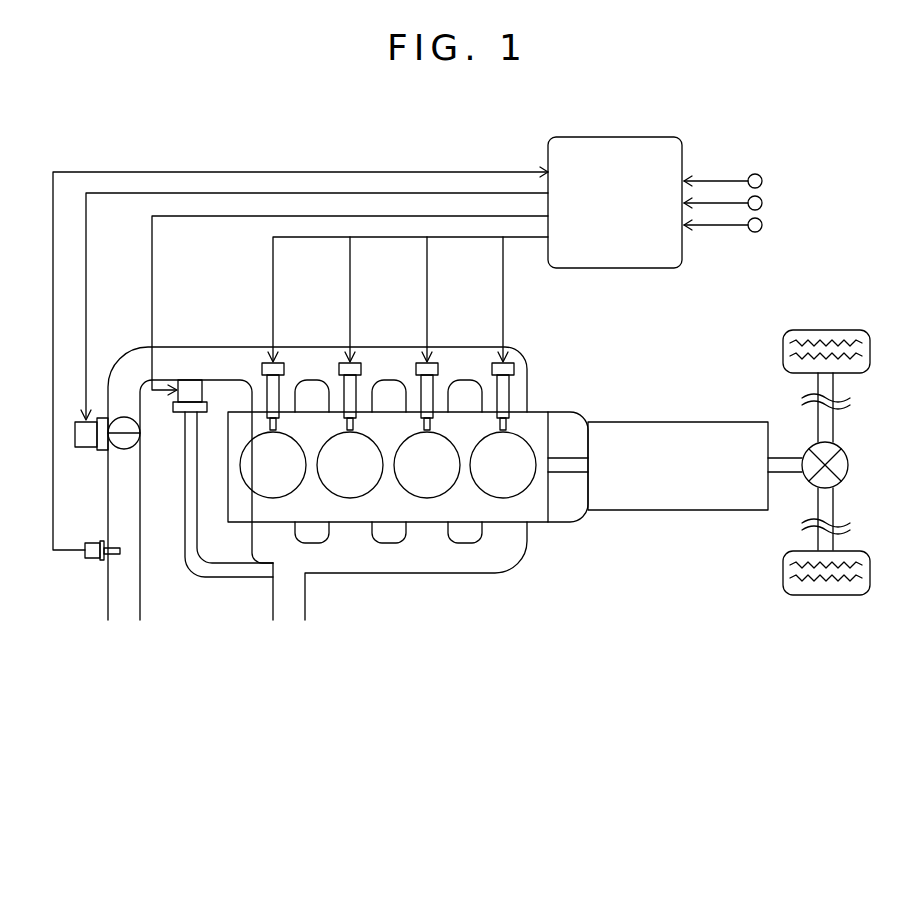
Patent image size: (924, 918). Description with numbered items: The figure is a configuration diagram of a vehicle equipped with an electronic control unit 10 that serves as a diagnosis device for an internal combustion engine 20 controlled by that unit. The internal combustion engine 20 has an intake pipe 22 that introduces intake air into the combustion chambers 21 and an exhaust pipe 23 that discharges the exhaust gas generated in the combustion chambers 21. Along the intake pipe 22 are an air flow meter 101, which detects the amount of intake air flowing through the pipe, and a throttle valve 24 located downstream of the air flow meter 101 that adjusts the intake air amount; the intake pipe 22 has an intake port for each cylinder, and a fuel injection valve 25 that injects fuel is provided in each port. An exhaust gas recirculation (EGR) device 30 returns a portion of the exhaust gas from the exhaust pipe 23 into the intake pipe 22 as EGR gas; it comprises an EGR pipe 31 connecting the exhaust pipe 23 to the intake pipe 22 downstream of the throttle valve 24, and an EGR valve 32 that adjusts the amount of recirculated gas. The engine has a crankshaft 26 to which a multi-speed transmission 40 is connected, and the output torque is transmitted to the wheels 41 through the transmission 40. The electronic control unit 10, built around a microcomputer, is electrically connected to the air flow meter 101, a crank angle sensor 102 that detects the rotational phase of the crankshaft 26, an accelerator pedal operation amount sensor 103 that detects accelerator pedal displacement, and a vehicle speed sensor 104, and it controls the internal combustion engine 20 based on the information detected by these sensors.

The electronic control unit 10 is at (607, 268).
The internal combustion engine 20 is at (535, 575).
The combustion chambers 21 is at (259, 475).
The intake pipe 22 is at (140, 588).
The exhaust pipe 23 is at (305, 597).
The throttle valve 24 is at (85, 447).
The fuel injection valve 25 is at (284, 369).
The crankshaft 26 is at (570, 474).
The exhaust gas recirculation (EGR) device 30 is at (214, 512).
The EGR pipe 31 is at (233, 577).
The EGR valve 32 is at (183, 413).
The multi-speed transmission 40 is at (676, 422).
The wheels 41 is at (870, 350).
The air flow meter 101 is at (90, 560).
The crank angle sensor 102 is at (762, 181).
The accelerator pedal operation amount sensor 103 is at (762, 203).
The vehicle speed sensor 104 is at (762, 225).